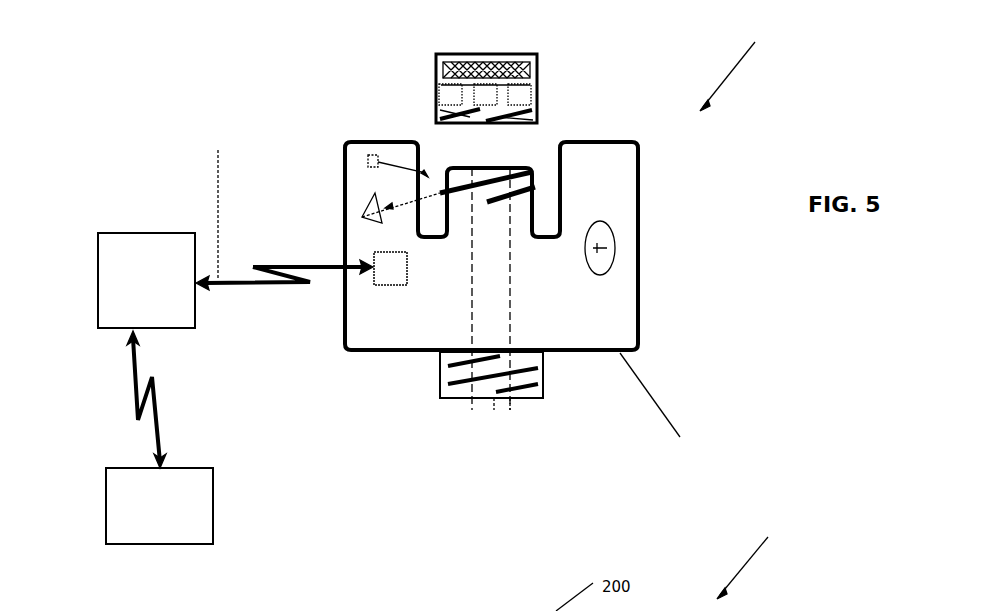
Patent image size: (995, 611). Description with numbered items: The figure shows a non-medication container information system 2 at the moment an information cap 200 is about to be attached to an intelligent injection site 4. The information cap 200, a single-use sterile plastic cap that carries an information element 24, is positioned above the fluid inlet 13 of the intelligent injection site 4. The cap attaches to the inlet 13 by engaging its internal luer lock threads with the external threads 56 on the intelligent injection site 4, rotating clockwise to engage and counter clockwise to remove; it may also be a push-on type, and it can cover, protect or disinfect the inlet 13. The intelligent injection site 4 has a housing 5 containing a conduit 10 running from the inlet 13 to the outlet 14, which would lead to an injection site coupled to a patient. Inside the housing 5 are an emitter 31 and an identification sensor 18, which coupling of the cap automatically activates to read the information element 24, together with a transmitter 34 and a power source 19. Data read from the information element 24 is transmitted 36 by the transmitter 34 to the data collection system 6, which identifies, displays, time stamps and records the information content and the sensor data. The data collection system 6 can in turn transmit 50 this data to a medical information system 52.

The non-medication container information system 2 is at (742, 318).
The intelligent injection site 4 is at (348, 352).
The housing 5 is at (659, 401).
The data collection system 6 is at (146, 280).
The conduit 10 is at (510, 270).
The fluid inlet 13 is at (490, 167).
The outlet 14 is at (492, 410).
The identification sensor 18 is at (362, 217).
The power source 19 is at (615, 243).
The information element 24 is at (540, 96).
The emitter 31 is at (368, 162).
The transmitter 34 is at (390, 268).
The transmission 36 is at (231, 212).
The transmission 50 is at (135, 392).
The medical information system 52 is at (105, 482).
The external threads 56 is at (535, 189).
The information cap 200 is at (537, 55).